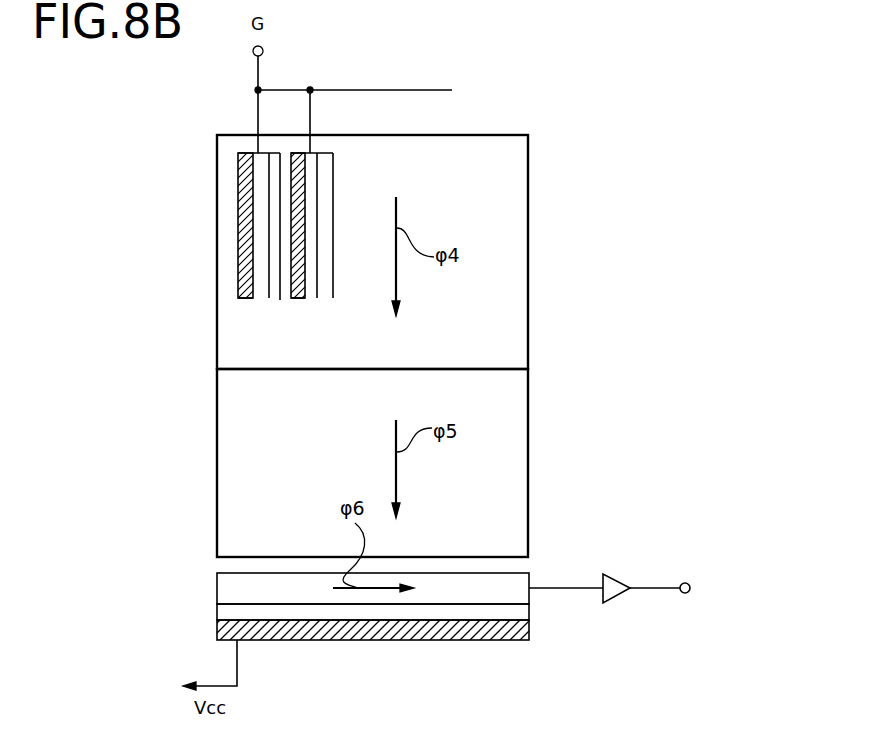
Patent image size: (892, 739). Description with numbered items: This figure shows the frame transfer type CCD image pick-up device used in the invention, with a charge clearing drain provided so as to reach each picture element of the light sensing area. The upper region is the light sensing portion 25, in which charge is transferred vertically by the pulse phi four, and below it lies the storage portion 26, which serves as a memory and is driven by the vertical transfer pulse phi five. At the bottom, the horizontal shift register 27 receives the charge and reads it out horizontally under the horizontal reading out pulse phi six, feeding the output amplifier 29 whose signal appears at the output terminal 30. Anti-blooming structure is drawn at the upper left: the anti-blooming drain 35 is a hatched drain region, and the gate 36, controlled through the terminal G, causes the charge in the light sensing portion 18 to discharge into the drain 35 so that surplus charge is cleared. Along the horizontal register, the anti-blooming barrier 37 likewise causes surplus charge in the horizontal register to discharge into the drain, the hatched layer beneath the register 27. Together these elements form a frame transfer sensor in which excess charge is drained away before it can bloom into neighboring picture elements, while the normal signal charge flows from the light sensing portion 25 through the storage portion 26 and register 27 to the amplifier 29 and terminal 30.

The light sensing portion 18 is at (273, 242).
The light sensing portion 25 is at (510, 238).
The storage portion 26 is at (511, 479).
The horizontal shift register 27 is at (223, 589).
The output amplifier 29 is at (617, 577).
The output terminal 30 is at (686, 583).
The anti-blooming drain 35 is at (240, 171).
The gate 36 is at (260, 204).
The anti-blooming barrier 37 is at (225, 611).